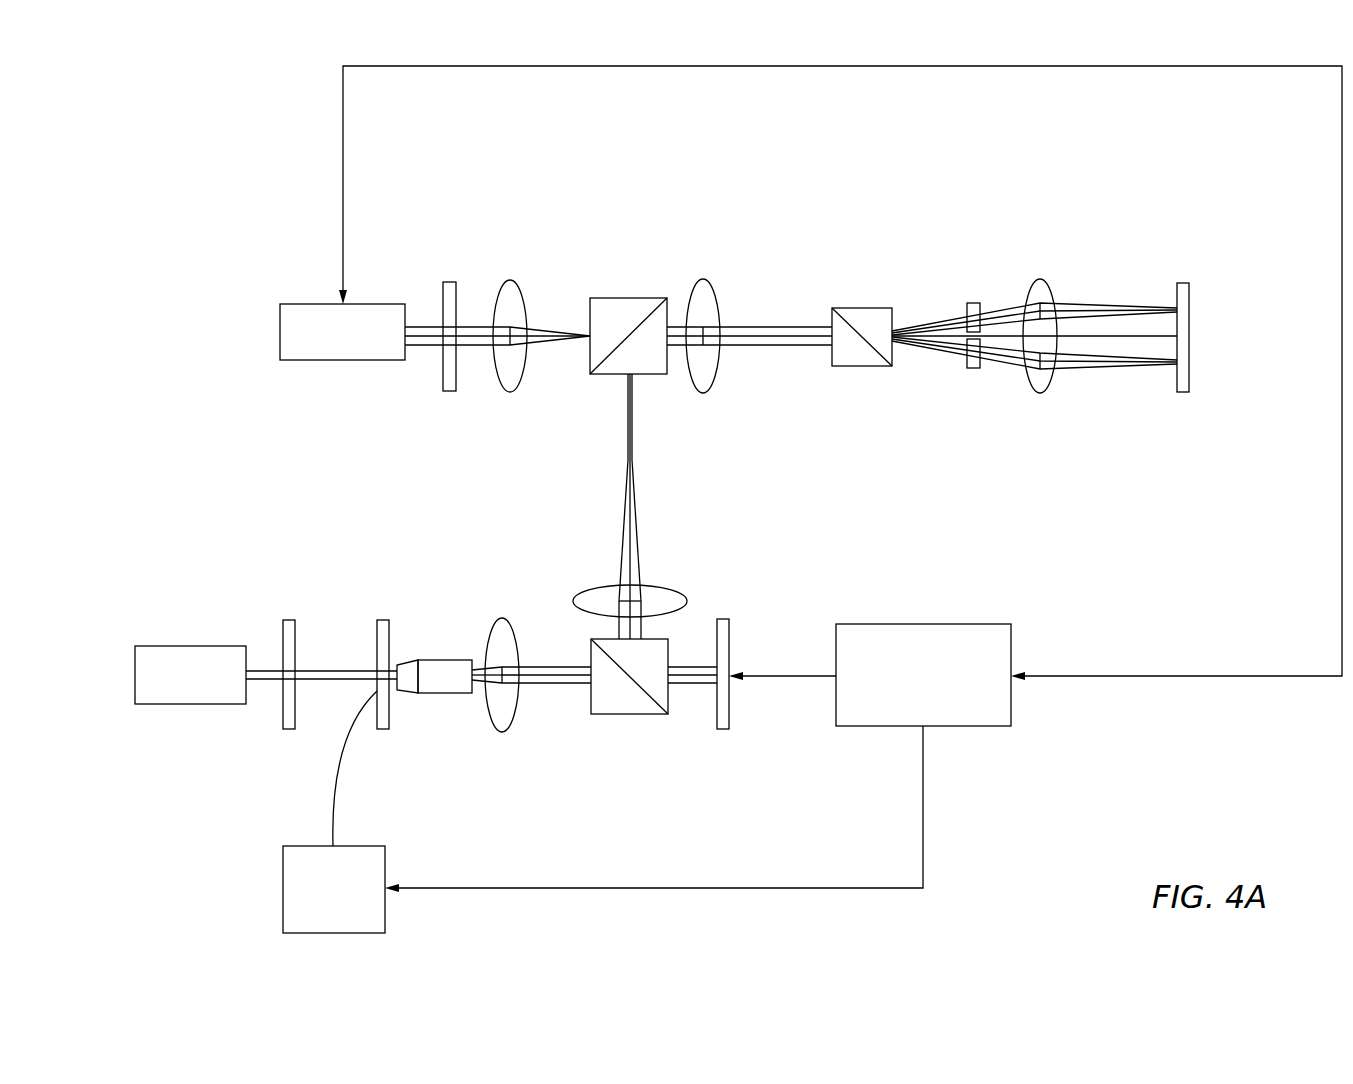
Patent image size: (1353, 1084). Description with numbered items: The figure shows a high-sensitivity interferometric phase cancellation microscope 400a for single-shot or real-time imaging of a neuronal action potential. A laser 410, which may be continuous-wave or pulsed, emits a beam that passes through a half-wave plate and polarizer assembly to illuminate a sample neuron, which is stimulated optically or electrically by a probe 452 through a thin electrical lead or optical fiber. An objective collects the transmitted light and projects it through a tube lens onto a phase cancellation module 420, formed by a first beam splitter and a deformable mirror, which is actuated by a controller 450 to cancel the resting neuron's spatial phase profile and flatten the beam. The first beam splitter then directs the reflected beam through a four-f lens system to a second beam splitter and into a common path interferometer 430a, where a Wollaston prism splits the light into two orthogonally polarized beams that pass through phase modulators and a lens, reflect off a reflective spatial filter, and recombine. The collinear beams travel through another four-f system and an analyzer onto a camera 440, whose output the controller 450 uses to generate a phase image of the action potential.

The microscope 400a is at (150, 236).
The laser 410 is at (190, 692).
The phase cancellation module 420 is at (763, 785).
The common path interferometer 430a is at (1230, 215).
The camera 440 is at (342, 351).
The controller 450 is at (900, 704).
The probe 452 is at (311, 918).